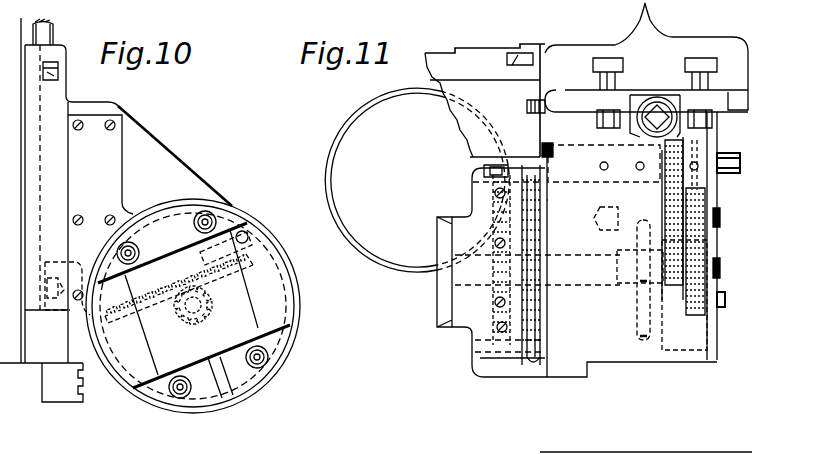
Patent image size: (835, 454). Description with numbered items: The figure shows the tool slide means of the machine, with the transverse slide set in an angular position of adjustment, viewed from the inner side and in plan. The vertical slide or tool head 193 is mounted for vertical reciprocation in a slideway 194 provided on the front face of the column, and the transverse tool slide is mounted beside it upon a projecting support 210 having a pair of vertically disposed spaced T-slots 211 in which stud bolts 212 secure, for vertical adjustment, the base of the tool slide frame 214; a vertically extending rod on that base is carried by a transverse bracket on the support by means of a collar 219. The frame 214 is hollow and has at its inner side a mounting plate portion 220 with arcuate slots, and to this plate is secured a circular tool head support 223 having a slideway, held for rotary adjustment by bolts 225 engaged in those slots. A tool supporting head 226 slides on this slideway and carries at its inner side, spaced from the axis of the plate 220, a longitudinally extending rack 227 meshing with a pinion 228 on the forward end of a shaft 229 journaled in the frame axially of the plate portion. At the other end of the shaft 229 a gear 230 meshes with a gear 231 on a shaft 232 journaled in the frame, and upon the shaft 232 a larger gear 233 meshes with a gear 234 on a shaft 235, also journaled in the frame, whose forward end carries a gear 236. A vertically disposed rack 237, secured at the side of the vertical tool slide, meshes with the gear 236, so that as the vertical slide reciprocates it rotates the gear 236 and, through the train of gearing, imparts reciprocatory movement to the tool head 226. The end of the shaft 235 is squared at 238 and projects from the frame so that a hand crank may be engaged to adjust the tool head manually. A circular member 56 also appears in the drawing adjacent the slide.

In FIG. 11, the circular wheel 56 is at (391, 106).
In FIG. 11, the vertical slide or tool head 193 is at (470, 157).
In FIG. 11, the slideway 194 is at (520, 56).
In FIG. 11, the projecting support 210 is at (736, 66).
In FIG. 11, the T-slots 211 is at (688, 58).
In FIG. 11, the stud bolts 212 is at (690, 84).
In FIG. 10, the tool slide frame 214 is at (155, 150).
In FIG. 11, the collar 219 is at (698, 450).
In FIG. 10, the mounting plate portion 220 is at (178, 204).
In FIG. 10, the circular tool head support 223 is at (180, 222).
In FIG. 10, the bolts 225 is at (217, 214).
In FIG. 10, the tool supporting head 226 is at (238, 312).
In FIG. 11, the tool supporting head 226 is at (442, 292).
In FIG. 10, the rack 227 is at (194, 268).
In FIG. 11, the rack 227 is at (492, 313).
In FIG. 10, the pinion 228 is at (210, 315).
In FIG. 11, the pinion 228 is at (486, 283).
In FIG. 10, the shaft 229 is at (190, 318).
In FIG. 11, the shaft 229 is at (593, 277).
In FIG. 11, the gear 230 is at (693, 320).
In FIG. 11, the gear 231 is at (722, 217).
In FIG. 11, the shaft 232 is at (648, 278).
In FIG. 11, the larger gear 233 is at (717, 196).
In FIG. 11, the gear 234 is at (700, 142).
In FIG. 11, the shaft 235 is at (598, 176).
In FIG. 11, the gear 236 is at (548, 200).
In FIG. 10, the vertically disposed rack 237 is at (62, 402).
In FIG. 11, the vertically disposed rack 237 is at (530, 118).
In FIG. 11, the squared end 238 is at (718, 150).